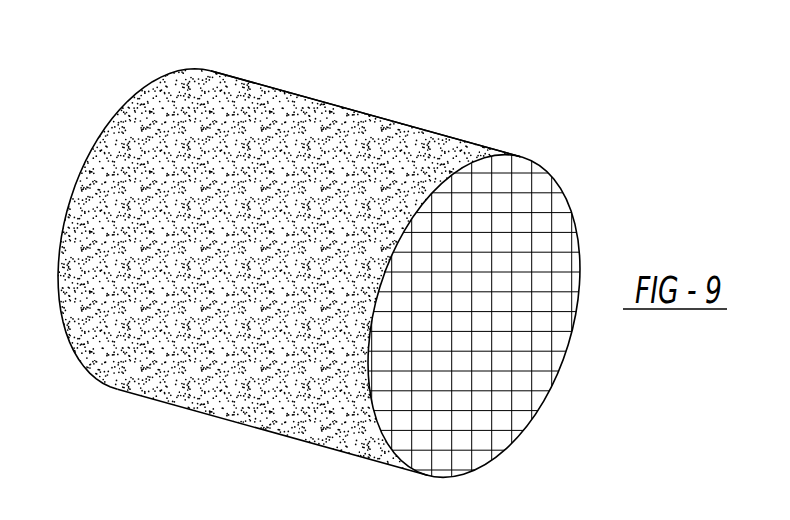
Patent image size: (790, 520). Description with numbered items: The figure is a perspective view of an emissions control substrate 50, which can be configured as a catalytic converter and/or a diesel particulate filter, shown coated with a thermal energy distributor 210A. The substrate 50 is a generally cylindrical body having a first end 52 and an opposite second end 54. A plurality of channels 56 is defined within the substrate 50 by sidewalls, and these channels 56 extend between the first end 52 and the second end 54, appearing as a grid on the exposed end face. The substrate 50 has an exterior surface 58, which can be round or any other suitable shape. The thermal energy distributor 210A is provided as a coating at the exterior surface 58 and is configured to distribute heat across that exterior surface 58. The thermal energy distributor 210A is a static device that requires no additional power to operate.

The emissions control substrate 50 is at (427, 78).
The first end 52 is at (566, 199).
The second end 54 is at (78, 180).
The channels 56 is at (520, 330).
The exterior surface 58 is at (167, 182).
The thermal energy distributor 210A is at (313, 165).